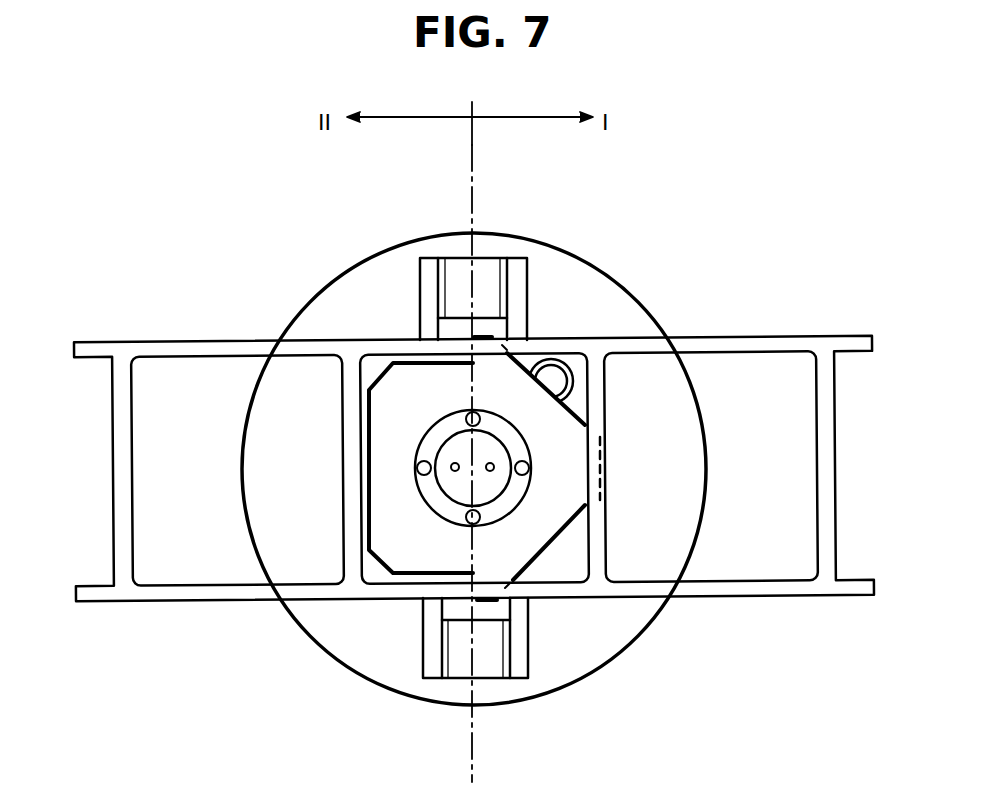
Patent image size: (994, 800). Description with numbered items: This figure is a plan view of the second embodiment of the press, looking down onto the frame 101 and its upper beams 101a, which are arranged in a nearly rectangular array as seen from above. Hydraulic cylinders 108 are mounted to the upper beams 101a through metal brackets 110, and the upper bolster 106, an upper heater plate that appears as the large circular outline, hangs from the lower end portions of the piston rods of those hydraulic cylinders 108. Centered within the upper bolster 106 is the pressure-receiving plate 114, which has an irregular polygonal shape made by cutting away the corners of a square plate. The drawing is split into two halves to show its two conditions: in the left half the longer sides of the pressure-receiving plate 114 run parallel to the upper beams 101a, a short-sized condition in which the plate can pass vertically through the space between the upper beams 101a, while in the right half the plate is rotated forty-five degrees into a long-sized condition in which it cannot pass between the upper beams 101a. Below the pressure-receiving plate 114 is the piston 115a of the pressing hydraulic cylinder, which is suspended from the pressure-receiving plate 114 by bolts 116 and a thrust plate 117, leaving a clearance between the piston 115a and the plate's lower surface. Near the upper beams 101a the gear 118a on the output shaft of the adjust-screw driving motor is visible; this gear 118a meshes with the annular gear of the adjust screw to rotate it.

The frame 101 is at (788, 338).
The upper beams 101a is at (598, 558).
The upper bolster 106 is at (693, 471).
The hydraulic cylinders 108 is at (457, 273).
The metal brackets 110 is at (518, 275).
The pressure-receiving plate 114 is at (393, 545).
The piston 115a is at (450, 450).
The bolts 116 is at (523, 447).
The thrust plate 117 is at (518, 486).
The gear 118a is at (550, 373).